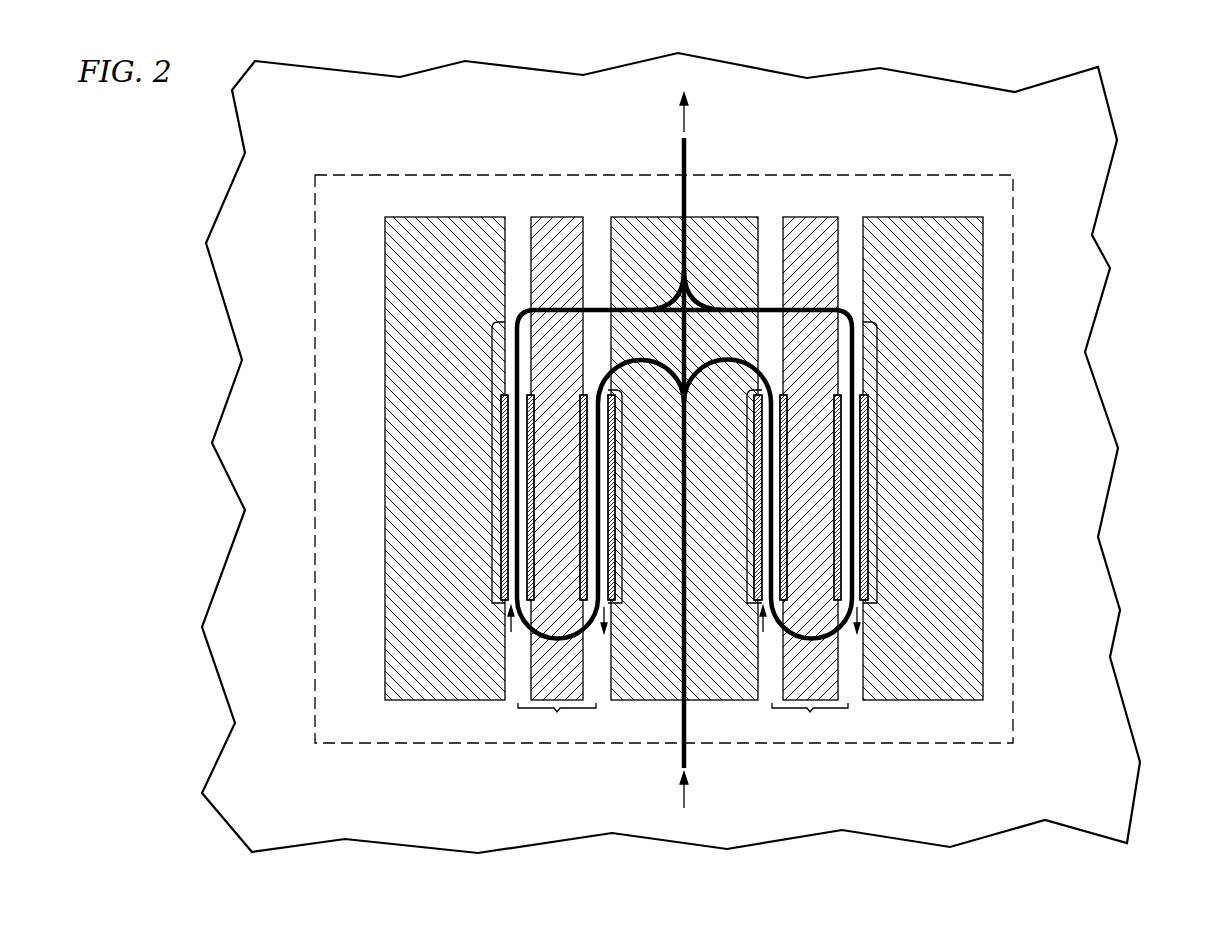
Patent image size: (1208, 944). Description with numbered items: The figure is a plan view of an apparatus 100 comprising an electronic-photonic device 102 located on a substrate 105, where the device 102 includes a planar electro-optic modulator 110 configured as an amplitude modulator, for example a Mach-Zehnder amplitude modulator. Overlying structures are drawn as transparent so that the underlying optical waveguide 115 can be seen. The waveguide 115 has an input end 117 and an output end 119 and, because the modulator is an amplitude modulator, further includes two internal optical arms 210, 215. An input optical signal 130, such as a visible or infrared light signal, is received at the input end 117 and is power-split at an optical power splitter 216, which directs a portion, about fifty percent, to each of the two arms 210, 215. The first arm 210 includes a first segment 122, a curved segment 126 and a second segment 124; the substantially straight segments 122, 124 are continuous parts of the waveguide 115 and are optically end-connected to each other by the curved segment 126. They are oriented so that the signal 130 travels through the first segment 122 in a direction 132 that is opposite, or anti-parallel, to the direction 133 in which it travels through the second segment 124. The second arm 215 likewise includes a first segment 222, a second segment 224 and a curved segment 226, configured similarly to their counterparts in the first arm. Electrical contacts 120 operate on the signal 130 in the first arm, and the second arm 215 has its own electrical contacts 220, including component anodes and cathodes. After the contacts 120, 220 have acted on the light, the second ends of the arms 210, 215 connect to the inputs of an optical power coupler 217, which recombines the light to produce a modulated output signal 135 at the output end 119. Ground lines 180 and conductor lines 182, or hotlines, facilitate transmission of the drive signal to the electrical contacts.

The apparatus 100 is at (170, 140).
The electronic-photonic device 102 is at (362, 150).
The substrate 105 is at (1107, 195).
The electro-optic modulator 110 is at (980, 192).
The optical waveguide 115 is at (420, 300).
The input end 117 is at (682, 758).
The output end 119 is at (688, 158).
The electrical contacts 120 is at (482, 585).
The first segment 122 is at (623, 518).
The second segment 124 is at (492, 465).
The curved segment 126 is at (557, 720).
The input optical signal 130 is at (684, 802).
The direction 132 is at (612, 630).
The direction 133 is at (506, 630).
The output signal 135 is at (684, 101).
The ground lines 180 is at (451, 232).
The conductor lines 182 is at (561, 232).
The first optical arm 210 is at (520, 312).
The second optical arm 215 is at (855, 310).
The optical power splitter 216 is at (680, 403).
The optical power coupler 217 is at (688, 282).
The electrical contacts 220 is at (886, 585).
The first segment 222 is at (747, 518).
The second segment 224 is at (878, 465).
The curved segment 226 is at (810, 720).